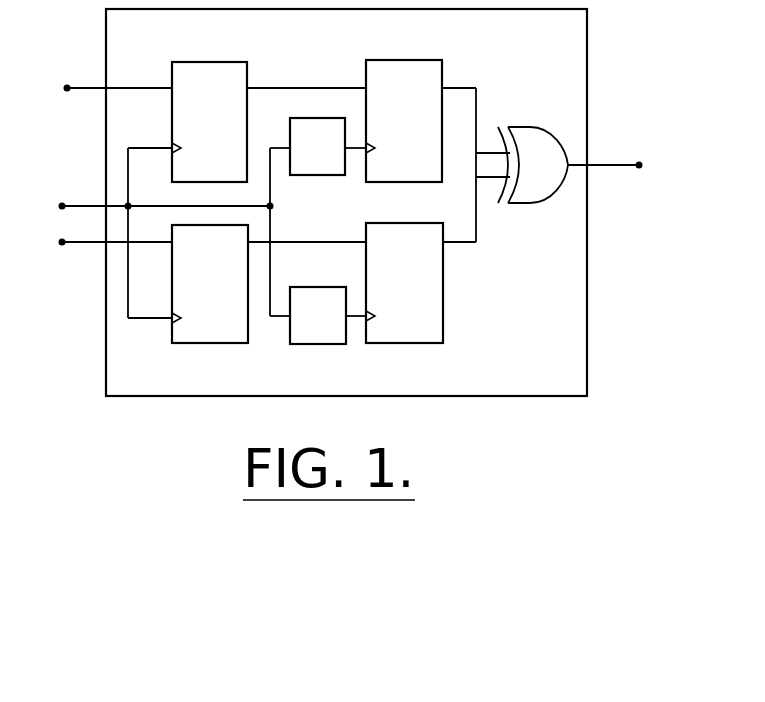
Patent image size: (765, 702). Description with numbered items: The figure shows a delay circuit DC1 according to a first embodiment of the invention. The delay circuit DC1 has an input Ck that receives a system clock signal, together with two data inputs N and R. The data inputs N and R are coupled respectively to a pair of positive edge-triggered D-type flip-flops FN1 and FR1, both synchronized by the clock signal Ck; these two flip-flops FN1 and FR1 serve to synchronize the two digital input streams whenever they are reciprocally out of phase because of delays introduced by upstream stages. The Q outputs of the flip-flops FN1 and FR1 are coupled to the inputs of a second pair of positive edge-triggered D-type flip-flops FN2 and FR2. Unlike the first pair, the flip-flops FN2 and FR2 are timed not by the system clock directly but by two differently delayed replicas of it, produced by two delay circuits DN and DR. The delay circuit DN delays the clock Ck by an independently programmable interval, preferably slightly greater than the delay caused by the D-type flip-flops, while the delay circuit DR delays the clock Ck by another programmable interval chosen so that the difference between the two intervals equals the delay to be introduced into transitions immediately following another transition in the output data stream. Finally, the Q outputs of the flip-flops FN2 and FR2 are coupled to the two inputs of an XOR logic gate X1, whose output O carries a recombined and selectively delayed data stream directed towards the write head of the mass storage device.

The delay circuit DC1 is at (370, 222).
The positive edge-triggered D-type flip-flop FN1 is at (187, 99).
The positive edge-triggered D-type flip-flop FN2 is at (382, 99).
The positive edge-triggered D-type flip-flop FR1 is at (189, 306).
The positive edge-triggered D-type flip-flop FR2 is at (386, 305).
The delay circuit DN is at (336, 167).
The delay circuit DR is at (293, 337).
The XOR logic gate X1 is at (528, 145).
The data input N is at (68, 114).
The input for system clock signal Ck is at (65, 181).
The data input R is at (69, 269).
The output O is at (639, 190).